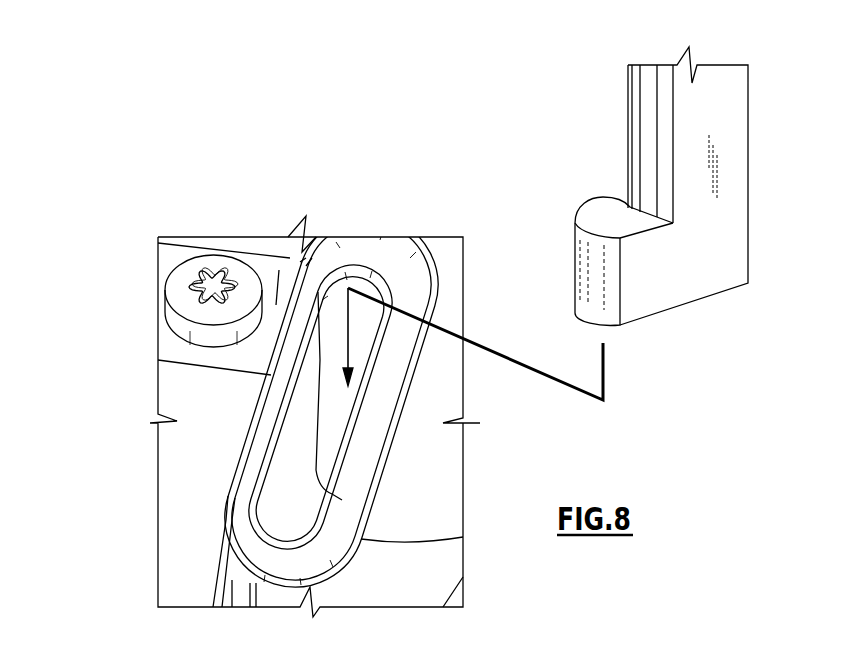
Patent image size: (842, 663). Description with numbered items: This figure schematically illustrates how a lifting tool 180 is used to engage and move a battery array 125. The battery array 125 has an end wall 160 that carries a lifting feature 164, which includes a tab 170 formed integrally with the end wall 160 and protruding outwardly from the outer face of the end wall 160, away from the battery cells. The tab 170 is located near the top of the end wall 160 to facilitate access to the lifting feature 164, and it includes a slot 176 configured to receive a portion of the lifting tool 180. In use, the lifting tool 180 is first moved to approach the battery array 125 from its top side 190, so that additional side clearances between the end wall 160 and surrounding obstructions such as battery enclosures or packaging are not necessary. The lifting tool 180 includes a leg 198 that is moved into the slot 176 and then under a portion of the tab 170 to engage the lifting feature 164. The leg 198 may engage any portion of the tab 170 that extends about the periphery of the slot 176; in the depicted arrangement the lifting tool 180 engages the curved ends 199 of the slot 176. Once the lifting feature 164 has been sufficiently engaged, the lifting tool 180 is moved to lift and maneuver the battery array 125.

The battery array 125 is at (210, 217).
The end wall 160 is at (332, 597).
The lifting feature 164 is at (377, 517).
The tab 170 is at (350, 497).
The slot 176 is at (340, 402).
The lifting tool 180 is at (737, 62).
The top side 190 is at (229, 418).
The leg 198 is at (602, 218).
The curved ends 199 is at (354, 268).